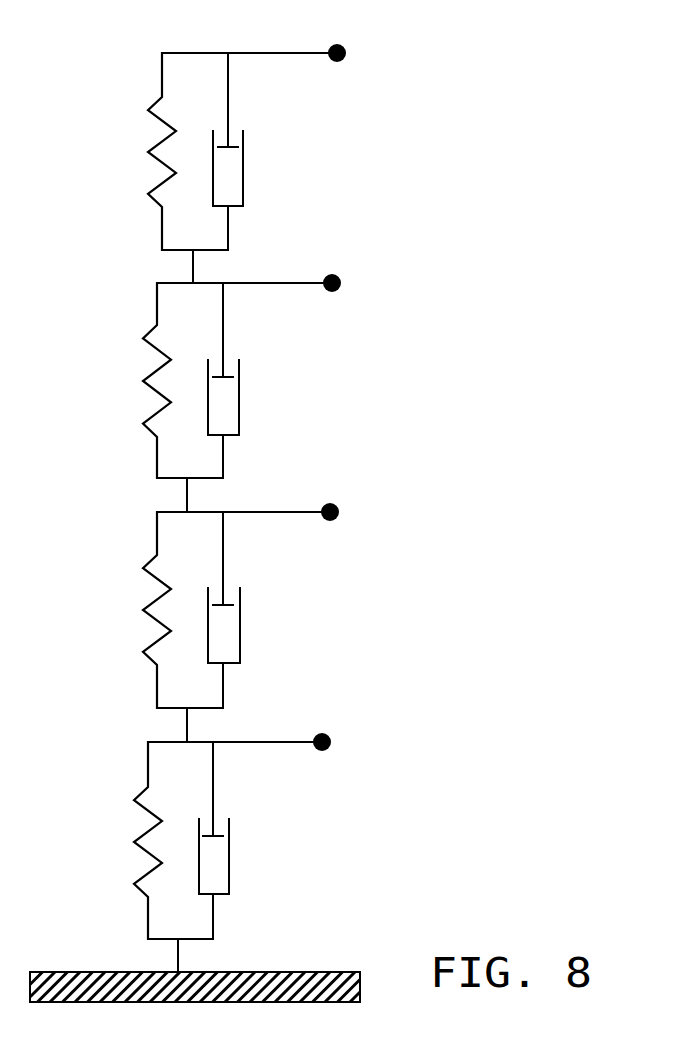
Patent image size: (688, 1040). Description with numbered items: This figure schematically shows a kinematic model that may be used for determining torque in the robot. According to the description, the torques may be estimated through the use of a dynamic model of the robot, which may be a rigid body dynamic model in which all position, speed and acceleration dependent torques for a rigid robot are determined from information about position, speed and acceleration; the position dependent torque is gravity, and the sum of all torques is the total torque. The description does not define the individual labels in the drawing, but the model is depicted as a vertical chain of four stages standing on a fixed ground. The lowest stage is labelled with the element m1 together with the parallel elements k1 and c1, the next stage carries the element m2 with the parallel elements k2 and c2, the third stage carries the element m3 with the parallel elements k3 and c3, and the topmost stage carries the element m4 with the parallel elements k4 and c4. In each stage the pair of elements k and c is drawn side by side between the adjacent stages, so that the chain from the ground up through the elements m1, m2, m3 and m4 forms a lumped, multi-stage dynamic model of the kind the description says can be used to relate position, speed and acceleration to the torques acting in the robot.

The mass 4 m4 is at (282, 50).
The spring 4 k4 is at (137, 151).
The damper 4 c4 is at (262, 151).
The mass 3 m3 is at (267, 282).
The spring 3 k3 is at (126, 380).
The damper 3 c3 is at (250, 380).
The mass 2 m2 is at (271, 513).
The spring 2 k2 is at (123, 610).
The damper 2 c2 is at (244, 610).
The mass 1 m1 is at (270, 742).
The spring 1 k1 is at (113, 840).
The damper 1 c1 is at (242, 840).